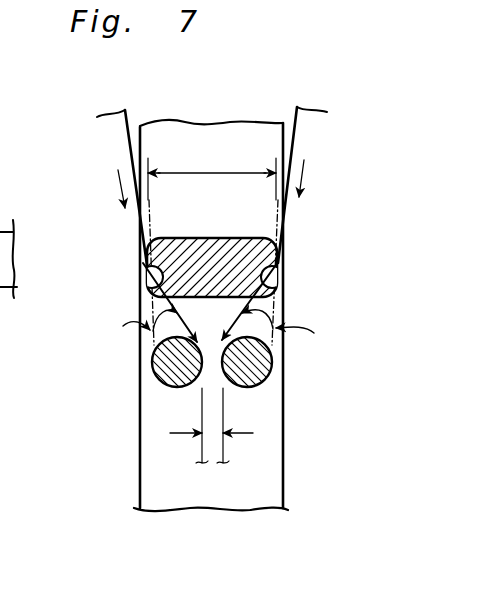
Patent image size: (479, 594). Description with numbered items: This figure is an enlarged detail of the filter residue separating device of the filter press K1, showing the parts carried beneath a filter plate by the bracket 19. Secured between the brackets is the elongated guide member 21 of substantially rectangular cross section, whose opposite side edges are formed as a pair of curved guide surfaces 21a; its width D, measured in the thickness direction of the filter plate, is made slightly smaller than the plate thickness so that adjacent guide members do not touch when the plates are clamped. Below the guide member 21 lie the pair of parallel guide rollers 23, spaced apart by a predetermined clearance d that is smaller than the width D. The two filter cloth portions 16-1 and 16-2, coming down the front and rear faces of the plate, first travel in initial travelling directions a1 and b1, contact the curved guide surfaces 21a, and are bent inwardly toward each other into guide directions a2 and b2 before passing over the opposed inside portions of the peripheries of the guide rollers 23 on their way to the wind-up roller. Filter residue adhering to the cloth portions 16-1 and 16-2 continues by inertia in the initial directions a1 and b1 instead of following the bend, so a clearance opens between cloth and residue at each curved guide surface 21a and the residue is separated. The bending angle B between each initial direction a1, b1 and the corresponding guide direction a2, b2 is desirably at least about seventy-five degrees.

The bracket 19 is at (191, 125).
The filter cloth portion 16-1 is at (125, 137).
The filter cloth portion 16-2 is at (299, 130).
The guide member 21 is at (208, 246).
The curved guide surface 21a is at (146, 268).
The guide roller 23 is at (167, 377).
The filter press K1 is at (128, 353).
The width of the guide member D is at (212, 173).
The predetermined clearance d is at (211, 425).
The bending angle B is at (219, 330).
The initial travelling direction a1 is at (109, 189).
The guide direction a2 is at (182, 302).
The initial travelling direction b1 is at (318, 178).
The guide direction b2 is at (249, 305).